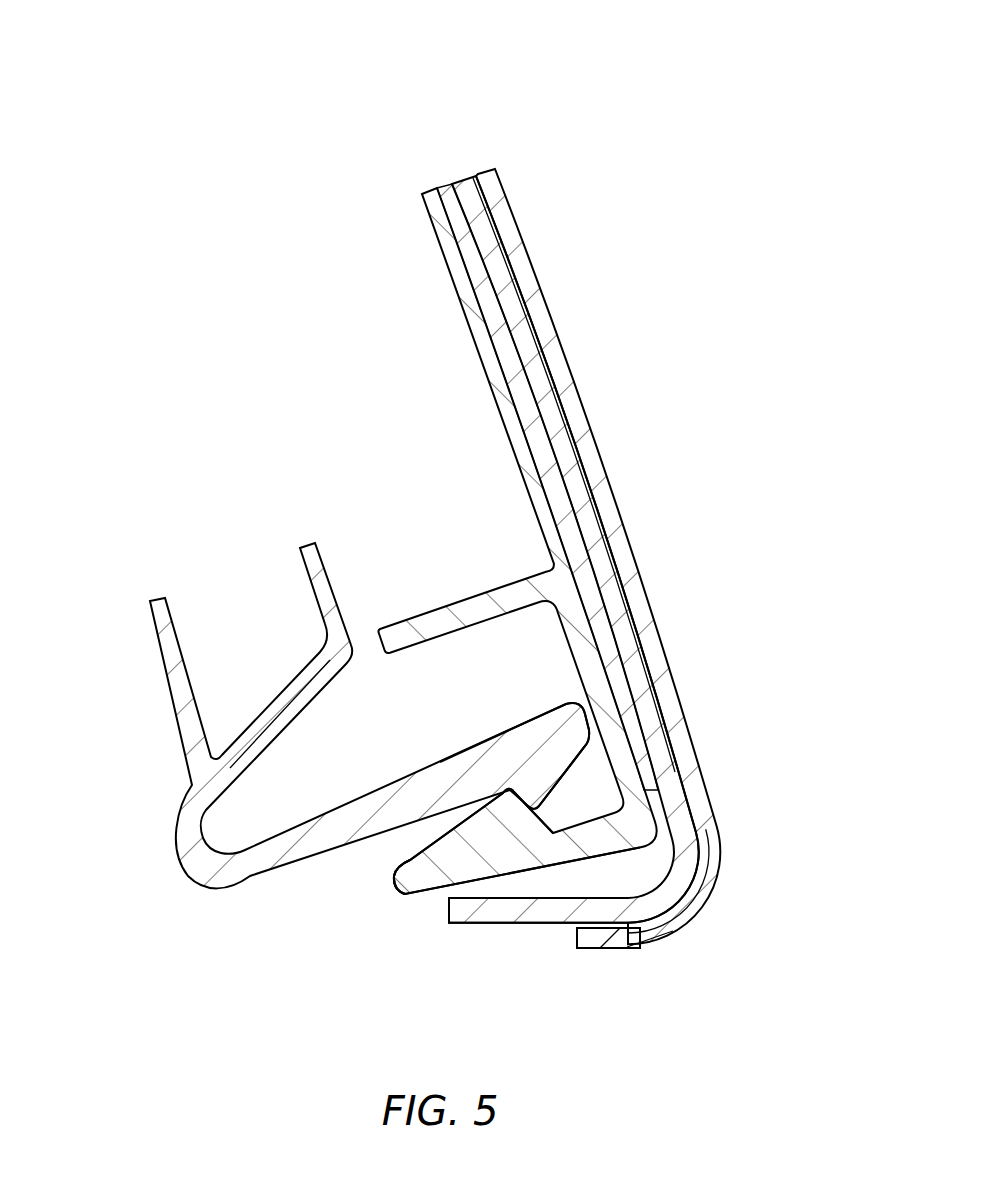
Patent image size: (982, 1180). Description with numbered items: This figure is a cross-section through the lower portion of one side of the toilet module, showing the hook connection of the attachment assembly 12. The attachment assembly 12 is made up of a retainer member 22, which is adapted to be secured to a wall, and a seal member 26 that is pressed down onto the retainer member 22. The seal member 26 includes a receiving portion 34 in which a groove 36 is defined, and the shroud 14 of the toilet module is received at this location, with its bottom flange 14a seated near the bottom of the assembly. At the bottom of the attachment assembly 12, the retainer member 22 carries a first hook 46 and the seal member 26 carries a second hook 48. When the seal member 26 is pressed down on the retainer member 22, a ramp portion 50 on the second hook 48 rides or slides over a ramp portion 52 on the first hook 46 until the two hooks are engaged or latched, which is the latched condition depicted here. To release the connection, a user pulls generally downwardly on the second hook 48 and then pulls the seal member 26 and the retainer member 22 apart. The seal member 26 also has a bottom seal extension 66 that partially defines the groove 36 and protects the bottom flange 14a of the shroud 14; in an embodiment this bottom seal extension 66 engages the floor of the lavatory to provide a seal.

The attachment assembly 12 is at (587, 152).
The shroud 14 is at (540, 371).
The bottom flange of the shroud 14a is at (471, 912).
The retainer member 22 is at (170, 680).
The seal member 26 is at (440, 242).
The receiving portion 34 is at (590, 452).
The groove 36 is at (490, 302).
The first hook 46 is at (523, 748).
The second hook 48 is at (452, 867).
The ramp portion 50 is at (412, 878).
The ramp portion 52 is at (565, 768).
The bottom seal extension 66 is at (596, 949).